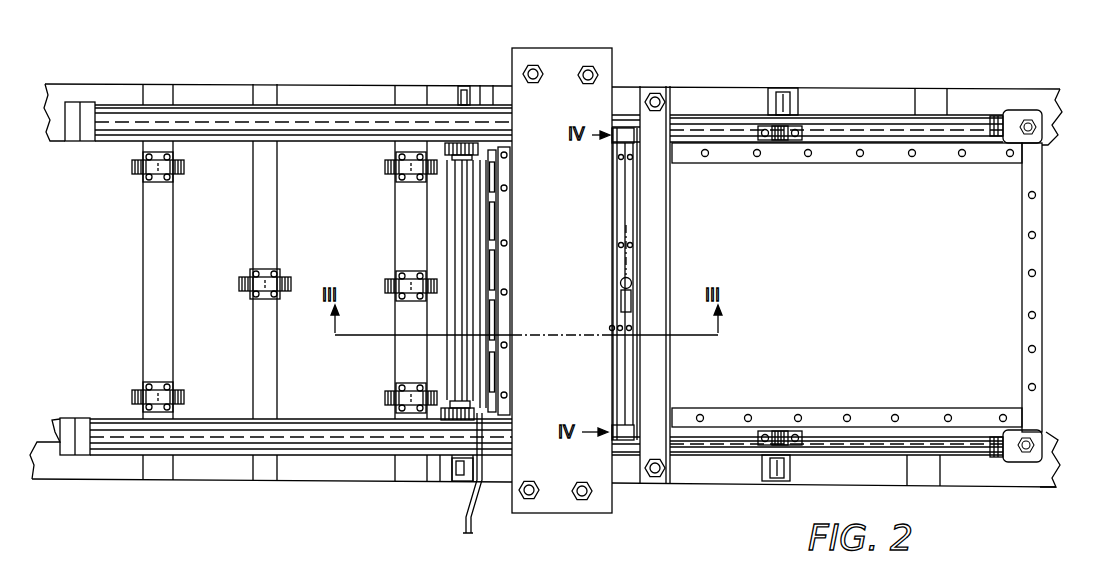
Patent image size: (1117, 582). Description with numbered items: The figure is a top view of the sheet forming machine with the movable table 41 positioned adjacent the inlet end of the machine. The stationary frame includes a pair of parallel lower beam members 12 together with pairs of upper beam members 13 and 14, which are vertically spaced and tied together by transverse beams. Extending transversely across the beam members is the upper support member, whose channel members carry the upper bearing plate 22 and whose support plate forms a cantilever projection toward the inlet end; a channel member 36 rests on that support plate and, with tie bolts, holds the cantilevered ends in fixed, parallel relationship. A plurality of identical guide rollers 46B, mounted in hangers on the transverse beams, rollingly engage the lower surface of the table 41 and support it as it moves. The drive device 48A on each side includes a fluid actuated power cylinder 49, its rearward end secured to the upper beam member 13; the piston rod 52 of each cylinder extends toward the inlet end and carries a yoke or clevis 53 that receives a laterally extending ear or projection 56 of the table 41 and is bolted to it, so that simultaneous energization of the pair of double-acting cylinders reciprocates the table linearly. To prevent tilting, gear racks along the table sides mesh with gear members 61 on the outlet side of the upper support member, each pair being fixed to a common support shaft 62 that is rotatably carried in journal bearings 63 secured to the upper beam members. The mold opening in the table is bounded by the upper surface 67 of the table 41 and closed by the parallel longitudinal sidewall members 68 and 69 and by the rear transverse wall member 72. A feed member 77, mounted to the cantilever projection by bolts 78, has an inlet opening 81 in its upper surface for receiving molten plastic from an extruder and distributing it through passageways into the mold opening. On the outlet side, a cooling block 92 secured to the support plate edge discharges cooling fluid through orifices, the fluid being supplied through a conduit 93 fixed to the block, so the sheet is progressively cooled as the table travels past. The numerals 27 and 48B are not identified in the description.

The lower beam member 12 is at (238, 95).
The upper beam member 13 is at (60, 130).
The upper beam member 14 is at (1042, 435).
The upper bearing plate 22 is at (562, 280).
The bolt nut 27 is at (536, 84).
The channel member 36 is at (650, 321).
The table 41 is at (1050, 158).
The guide roller 46B is at (142, 168).
The drive device 48A is at (370, 464).
The upper guide rail 48B is at (302, 100).
The power cylinder 49 is at (348, 120).
The piston rod 52 is at (893, 117).
The yoke or clevis 53 is at (995, 120).
The ear or projection 56 is at (1035, 108).
The gear member 61 is at (447, 156).
The support shaft 62 is at (466, 228).
The journal bearing 63 is at (797, 435).
The upper surface of the table 67 is at (856, 290).
The longitudinal sidewall member 68 is at (873, 420).
The longitudinal sidewall member 69 is at (830, 168).
The rear transverse wall member 72 is at (1020, 215).
The feed member 77 is at (628, 208).
The bolt 78 is at (630, 243).
The inlet opening 81 is at (631, 282).
The cooling block 92 is at (508, 174).
The conduit 93 is at (488, 213).